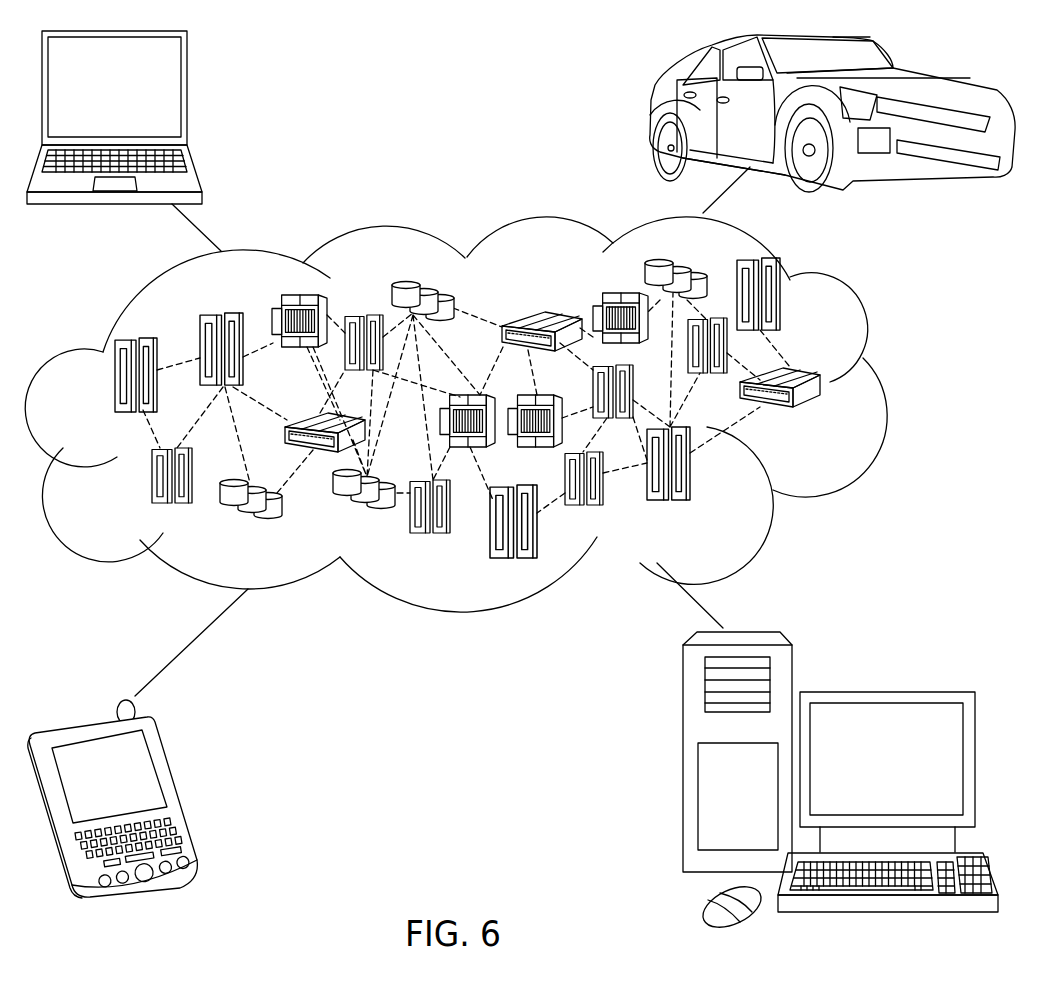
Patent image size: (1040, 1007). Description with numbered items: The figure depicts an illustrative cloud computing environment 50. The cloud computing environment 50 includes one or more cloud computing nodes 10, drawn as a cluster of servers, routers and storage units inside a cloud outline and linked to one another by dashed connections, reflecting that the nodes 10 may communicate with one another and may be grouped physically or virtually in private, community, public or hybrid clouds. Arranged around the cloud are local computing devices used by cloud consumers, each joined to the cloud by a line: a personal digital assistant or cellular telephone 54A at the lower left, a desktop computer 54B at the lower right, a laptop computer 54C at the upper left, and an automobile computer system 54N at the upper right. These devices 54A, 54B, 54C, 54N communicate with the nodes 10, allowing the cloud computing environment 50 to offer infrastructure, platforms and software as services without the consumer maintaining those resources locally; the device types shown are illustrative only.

The cloud computing nodes 10 is at (485, 414).
The cloud computing environment 50 is at (883, 383).
The personal digital assistant (PDA) or cellular telephone 54A is at (177, 792).
The desktop computer 54B is at (883, 692).
The laptop computer 54C is at (187, 95).
The automobile computer system 54N is at (648, 110).